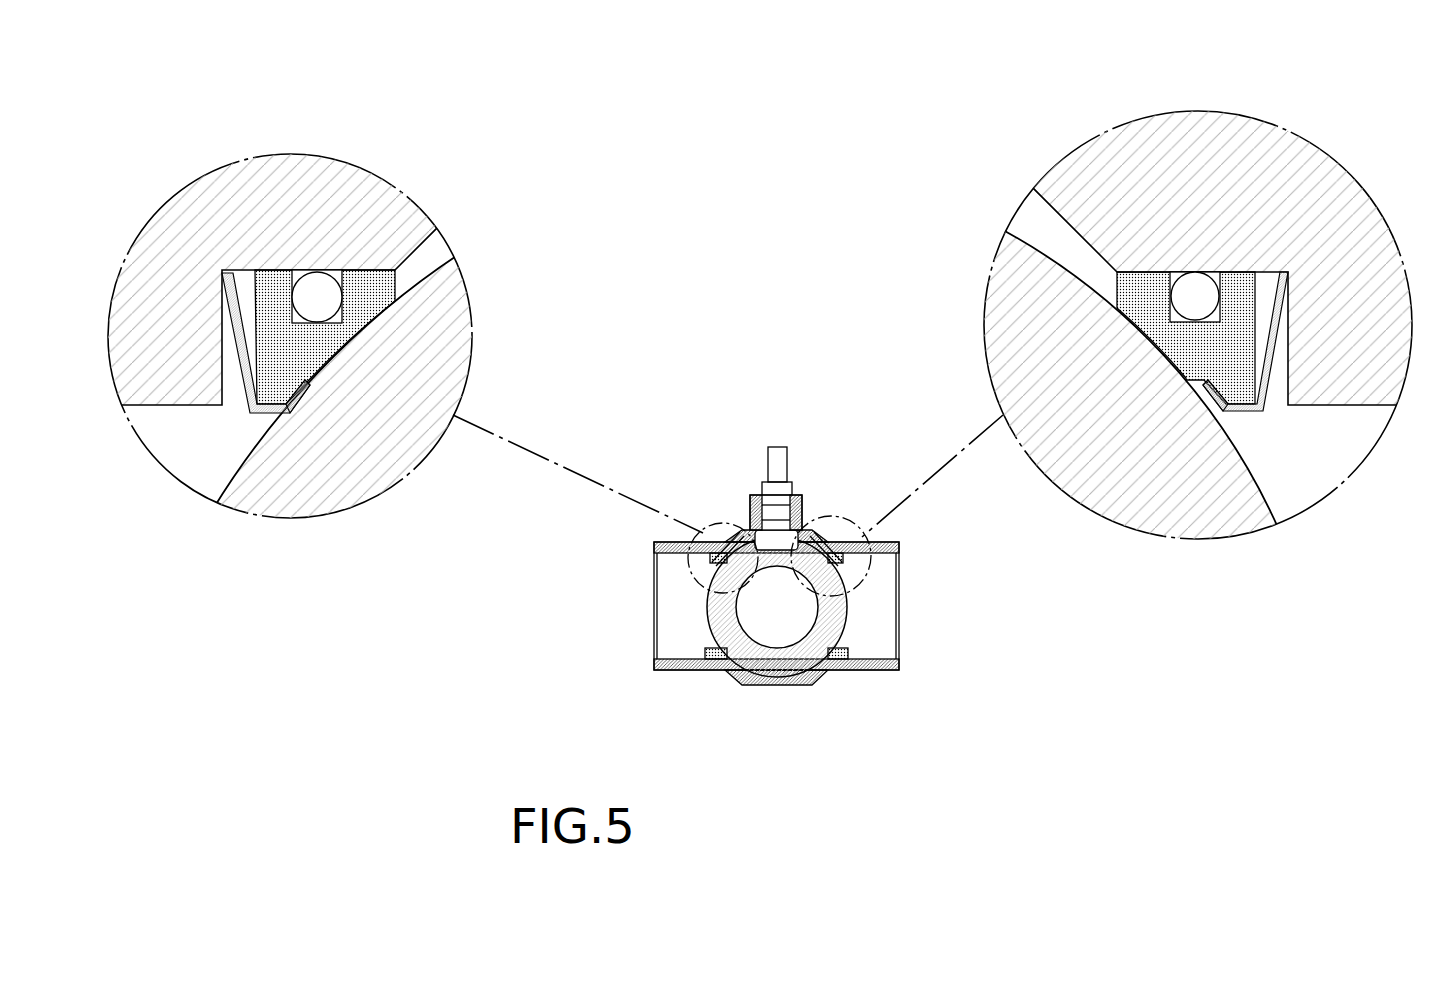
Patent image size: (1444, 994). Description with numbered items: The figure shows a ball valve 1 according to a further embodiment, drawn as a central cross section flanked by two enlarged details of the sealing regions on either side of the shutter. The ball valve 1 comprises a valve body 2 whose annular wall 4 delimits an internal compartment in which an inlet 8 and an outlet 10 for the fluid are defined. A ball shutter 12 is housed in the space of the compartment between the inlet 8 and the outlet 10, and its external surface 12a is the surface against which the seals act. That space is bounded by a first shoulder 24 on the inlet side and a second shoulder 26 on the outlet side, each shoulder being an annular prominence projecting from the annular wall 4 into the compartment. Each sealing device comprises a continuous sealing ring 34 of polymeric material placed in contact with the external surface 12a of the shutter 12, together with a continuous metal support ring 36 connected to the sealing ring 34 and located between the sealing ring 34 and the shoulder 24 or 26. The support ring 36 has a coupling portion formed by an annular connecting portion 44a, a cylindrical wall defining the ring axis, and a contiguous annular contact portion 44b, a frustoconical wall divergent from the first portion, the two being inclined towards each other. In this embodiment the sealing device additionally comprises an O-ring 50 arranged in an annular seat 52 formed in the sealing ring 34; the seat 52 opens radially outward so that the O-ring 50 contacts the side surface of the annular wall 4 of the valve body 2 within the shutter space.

The ball valve 1 is at (765, 556).
The valve body 2 is at (842, 675).
The annular wall 4 is at (888, 540).
The inlet 8 is at (880, 632).
The outlet 10 is at (673, 632).
The ball shutter 12 is at (1013, 293).
The external surface 12a is at (1047, 252).
The first shoulder 24 is at (1352, 390).
The second shoulder 26 is at (178, 362).
The sealing ring 34 is at (272, 298).
The support ring 36 is at (243, 412).
The connecting portion 44a is at (272, 407).
The contact portion 44b is at (305, 388).
The O-ring 50 is at (317, 292).
The annular seat 52 is at (295, 277).